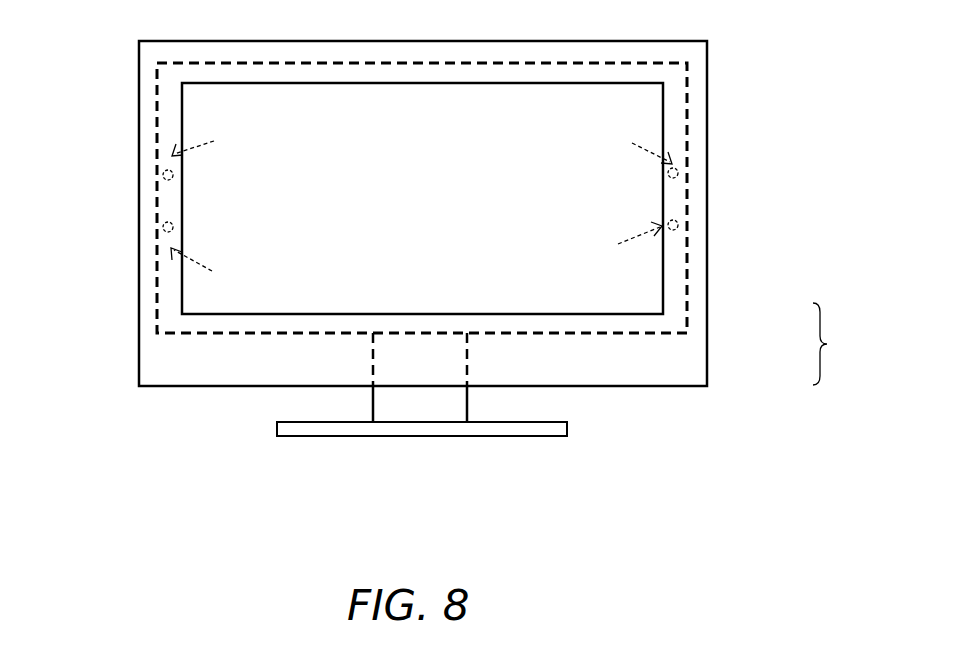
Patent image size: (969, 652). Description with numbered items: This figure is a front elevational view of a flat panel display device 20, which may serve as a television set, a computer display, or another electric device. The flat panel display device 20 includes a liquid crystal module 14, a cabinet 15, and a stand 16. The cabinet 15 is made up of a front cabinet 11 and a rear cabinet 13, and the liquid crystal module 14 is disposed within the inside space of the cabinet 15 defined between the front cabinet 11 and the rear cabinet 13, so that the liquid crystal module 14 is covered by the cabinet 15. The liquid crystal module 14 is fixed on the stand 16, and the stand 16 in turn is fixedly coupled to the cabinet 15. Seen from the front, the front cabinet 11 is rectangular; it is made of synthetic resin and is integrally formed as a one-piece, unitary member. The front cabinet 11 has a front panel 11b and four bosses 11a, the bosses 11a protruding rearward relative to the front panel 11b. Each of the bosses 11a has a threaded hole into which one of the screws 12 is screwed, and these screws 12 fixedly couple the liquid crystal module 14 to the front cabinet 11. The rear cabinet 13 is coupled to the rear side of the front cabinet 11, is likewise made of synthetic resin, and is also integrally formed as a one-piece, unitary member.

The flat panel display device 20 is at (137, 24).
The front cabinet 11 is at (698, 367).
The bosses 11a is at (163, 191).
The front panel 11b is at (695, 72).
The screws 12 is at (421, 210).
The rear cabinet 13 is at (722, 278).
The liquid crystal module 14 is at (597, 333).
The cabinet 15 is at (838, 344).
The stand 16 is at (395, 400).